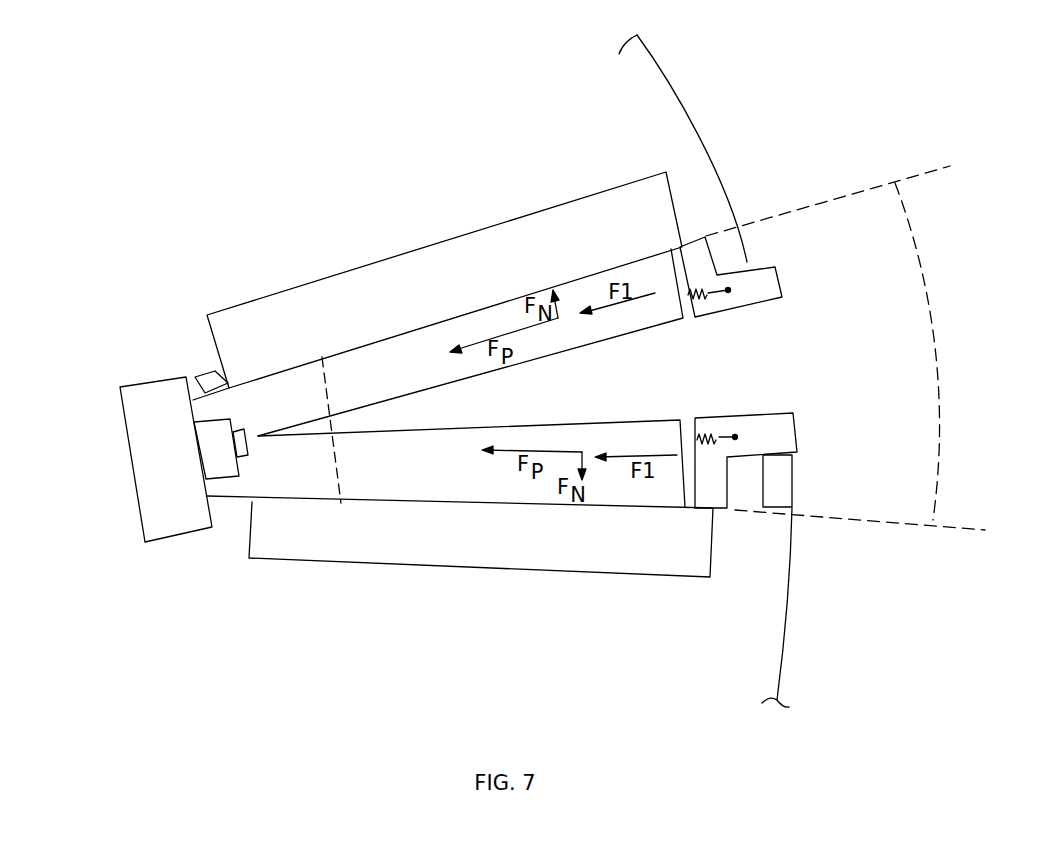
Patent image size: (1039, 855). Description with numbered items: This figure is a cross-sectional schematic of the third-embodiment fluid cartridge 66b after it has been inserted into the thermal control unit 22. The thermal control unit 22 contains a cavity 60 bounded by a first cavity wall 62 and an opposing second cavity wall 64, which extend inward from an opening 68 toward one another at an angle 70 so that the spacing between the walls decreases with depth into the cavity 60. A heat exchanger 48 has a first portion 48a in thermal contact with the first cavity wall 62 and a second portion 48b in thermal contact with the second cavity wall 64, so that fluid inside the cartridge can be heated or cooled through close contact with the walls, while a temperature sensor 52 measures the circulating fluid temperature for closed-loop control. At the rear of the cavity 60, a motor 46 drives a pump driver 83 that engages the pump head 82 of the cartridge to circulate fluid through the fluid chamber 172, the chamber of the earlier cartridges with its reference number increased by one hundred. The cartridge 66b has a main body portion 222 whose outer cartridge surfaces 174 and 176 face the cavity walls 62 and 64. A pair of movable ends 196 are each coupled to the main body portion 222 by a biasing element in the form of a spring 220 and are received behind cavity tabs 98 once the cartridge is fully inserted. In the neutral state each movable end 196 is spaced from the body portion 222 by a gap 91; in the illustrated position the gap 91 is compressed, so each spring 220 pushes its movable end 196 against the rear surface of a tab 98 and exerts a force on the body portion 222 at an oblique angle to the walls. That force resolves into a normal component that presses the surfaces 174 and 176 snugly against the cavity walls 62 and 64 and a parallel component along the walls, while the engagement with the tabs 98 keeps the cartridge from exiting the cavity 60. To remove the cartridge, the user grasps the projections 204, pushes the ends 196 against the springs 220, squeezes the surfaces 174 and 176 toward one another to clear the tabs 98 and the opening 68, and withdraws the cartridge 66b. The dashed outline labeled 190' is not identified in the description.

The thermal control unit 22 is at (106, 166).
The heat exchanger 48 is at (222, 282).
The first portion of heat exchanger 48a is at (227, 312).
The second portion of heat exchanger 48b is at (335, 567).
The temperature sensor 52 is at (205, 372).
The motor 46 is at (120, 408).
The pump driver 83 is at (210, 443).
The pump head 82 is at (243, 455).
The fluid chamber 172 is at (297, 478).
The angle 70 is at (323, 357).
The first cavity wall 62 is at (382, 337).
The cartridge surface 174 is at (424, 316).
The second cavity wall 64 is at (573, 508).
The cartridge surface 176 is at (523, 502).
The movable end 196 is at (693, 256).
The cavity tab 98 is at (724, 249).
The projection 204 is at (780, 277).
The spring 220 is at (708, 298).
The gap 91 is at (687, 312).
The opening 68 is at (755, 340).
The cavity 60 is at (657, 398).
The fluid cartridge 66b is at (812, 462).
The main body portion 222 is at (532, 342).
The rotated drum position 190' is at (861, 348).